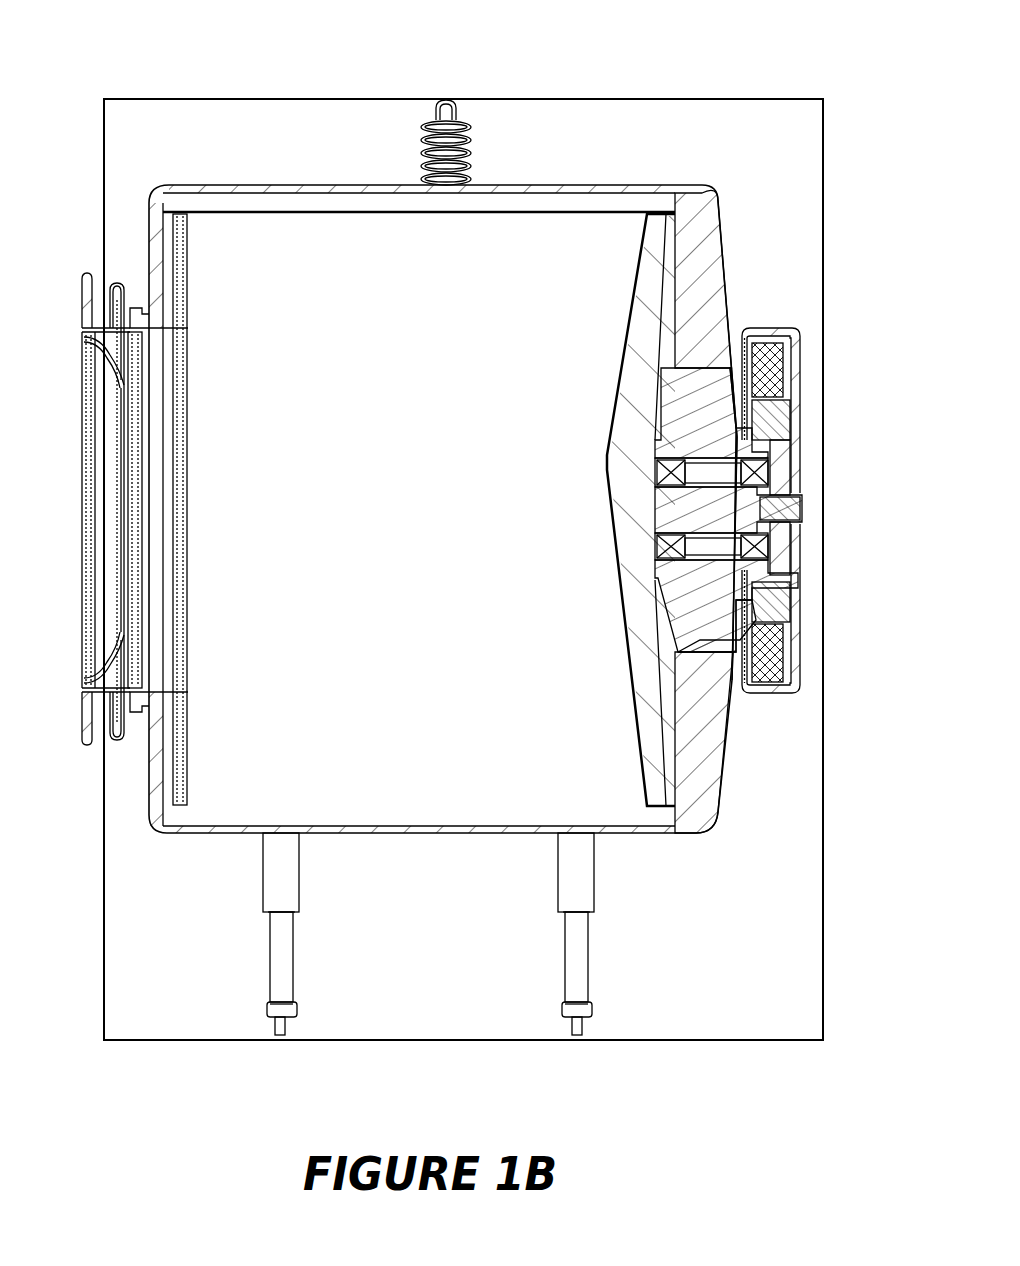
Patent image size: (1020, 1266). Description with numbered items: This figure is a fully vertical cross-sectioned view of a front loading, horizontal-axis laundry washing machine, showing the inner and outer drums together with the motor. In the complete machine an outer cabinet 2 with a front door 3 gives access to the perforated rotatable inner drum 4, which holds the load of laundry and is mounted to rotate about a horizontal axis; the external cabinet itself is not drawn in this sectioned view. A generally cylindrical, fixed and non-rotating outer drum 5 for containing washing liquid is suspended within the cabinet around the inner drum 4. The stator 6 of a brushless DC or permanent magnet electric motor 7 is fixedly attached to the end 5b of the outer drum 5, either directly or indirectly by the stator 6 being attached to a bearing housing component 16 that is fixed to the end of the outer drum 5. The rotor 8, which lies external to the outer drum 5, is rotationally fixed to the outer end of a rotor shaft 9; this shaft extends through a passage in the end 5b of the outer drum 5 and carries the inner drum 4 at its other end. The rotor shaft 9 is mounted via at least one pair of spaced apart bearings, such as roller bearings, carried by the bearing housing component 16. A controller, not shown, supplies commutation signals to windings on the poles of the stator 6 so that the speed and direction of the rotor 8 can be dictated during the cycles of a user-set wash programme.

The outer cabinet 2 is at (537, 99).
The front door 3 is at (80, 507).
The inner drum 4 is at (552, 213).
The outer drum 5 is at (645, 190).
The end of the outer drum 5b is at (728, 261).
The stator 6 is at (763, 393).
The electric motor 7 is at (819, 474).
The rotor 8 is at (790, 372).
The rotor shaft 9 is at (720, 505).
The bearing housing component 16 is at (700, 638).